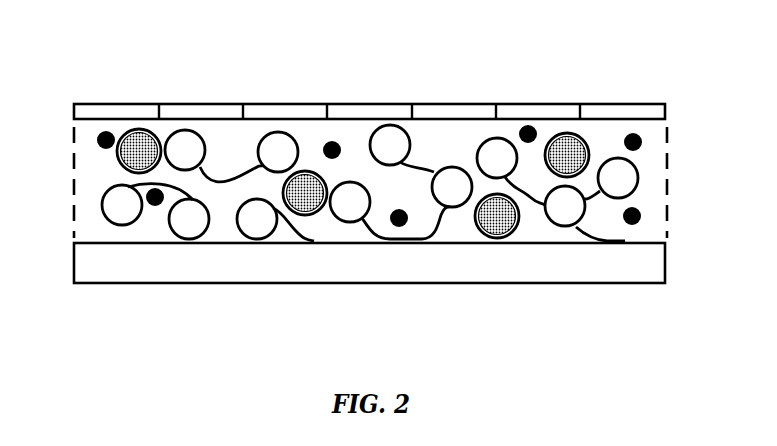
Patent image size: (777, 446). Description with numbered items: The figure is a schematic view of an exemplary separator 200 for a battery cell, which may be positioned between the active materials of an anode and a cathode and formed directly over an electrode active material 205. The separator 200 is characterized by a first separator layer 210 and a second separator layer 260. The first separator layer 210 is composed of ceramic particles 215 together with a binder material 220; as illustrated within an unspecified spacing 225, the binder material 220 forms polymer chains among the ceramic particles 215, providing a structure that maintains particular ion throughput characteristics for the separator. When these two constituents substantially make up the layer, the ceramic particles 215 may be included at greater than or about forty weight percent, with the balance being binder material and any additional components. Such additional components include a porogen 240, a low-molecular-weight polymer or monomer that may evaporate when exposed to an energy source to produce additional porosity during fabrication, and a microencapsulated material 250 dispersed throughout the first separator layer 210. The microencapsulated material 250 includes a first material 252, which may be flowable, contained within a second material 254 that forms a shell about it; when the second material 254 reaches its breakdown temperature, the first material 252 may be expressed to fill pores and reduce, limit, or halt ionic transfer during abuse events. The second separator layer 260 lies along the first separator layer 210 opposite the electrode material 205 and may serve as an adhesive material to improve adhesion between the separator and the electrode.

The separator 200 is at (255, 79).
The electrode active material 205 is at (165, 285).
The first separator layer 210 is at (667, 160).
The ceramic particles 215 is at (156, 105).
The binder material 220 is at (417, 166).
The unspecified spacing 225 is at (570, 122).
The porogen 240 is at (97, 140).
The microencapsulated material 250 is at (477, 263).
The first material 252 is at (493, 243).
The second material 254 is at (468, 238).
The second separator layer 260 is at (360, 104).